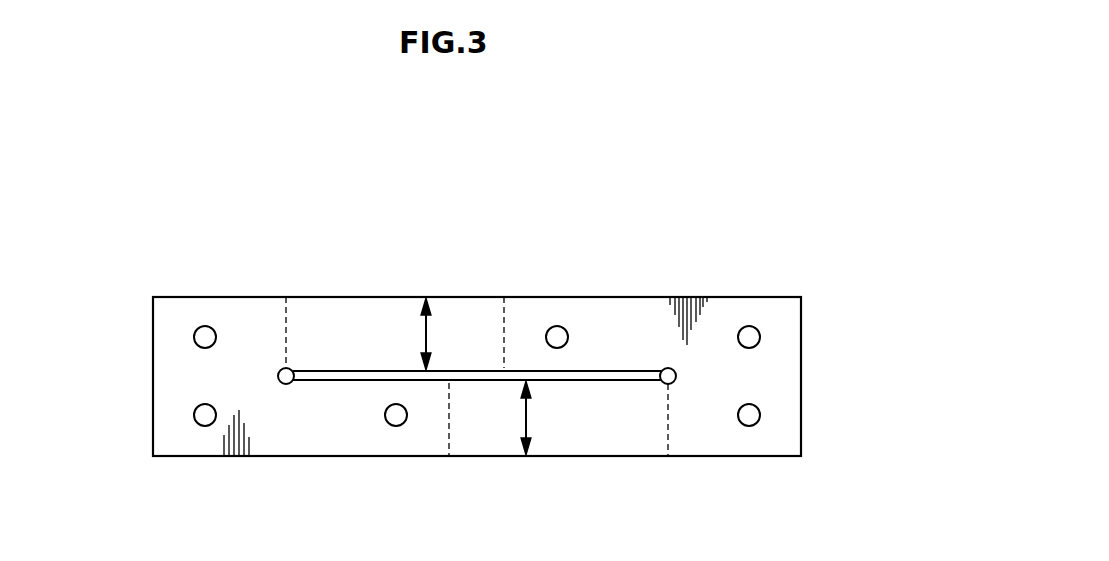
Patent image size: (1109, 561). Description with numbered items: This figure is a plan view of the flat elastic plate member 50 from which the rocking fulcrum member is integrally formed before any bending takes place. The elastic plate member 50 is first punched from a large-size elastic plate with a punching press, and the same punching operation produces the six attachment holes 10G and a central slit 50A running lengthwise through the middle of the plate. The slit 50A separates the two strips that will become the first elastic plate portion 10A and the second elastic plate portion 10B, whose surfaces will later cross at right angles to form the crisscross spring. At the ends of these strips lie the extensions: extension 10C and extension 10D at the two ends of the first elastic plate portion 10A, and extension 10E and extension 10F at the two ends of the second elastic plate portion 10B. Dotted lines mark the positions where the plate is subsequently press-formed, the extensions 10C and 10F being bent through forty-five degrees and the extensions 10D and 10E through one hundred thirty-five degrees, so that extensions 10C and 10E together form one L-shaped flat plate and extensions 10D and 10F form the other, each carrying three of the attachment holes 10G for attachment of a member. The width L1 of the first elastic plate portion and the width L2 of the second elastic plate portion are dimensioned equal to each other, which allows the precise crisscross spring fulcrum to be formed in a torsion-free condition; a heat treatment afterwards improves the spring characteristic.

The elastic plate member 50 is at (725, 226).
The central slit 50A is at (397, 371).
The first elastic plate portion 10A is at (607, 441).
The second elastic plate portion 10B is at (315, 310).
The extension 10C is at (307, 441).
The extension 10D is at (725, 441).
The extension 10E is at (233, 310).
The extension 10F is at (642, 310).
The attachment holes 10G is at (194, 337).
The width of the first elastic plate portion L1 is at (526, 420).
The width of the second elastic plate portion L2 is at (428, 330).